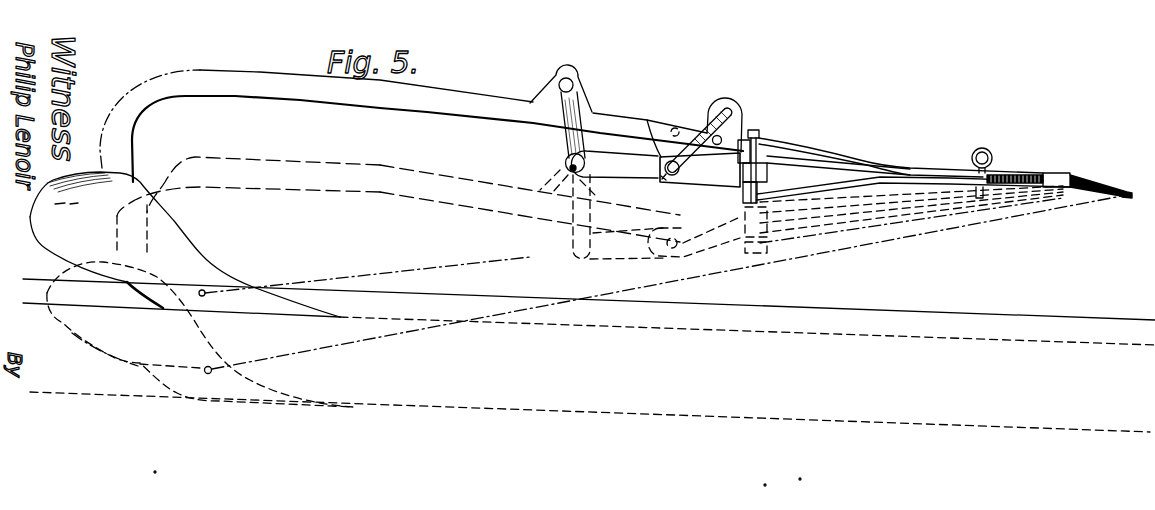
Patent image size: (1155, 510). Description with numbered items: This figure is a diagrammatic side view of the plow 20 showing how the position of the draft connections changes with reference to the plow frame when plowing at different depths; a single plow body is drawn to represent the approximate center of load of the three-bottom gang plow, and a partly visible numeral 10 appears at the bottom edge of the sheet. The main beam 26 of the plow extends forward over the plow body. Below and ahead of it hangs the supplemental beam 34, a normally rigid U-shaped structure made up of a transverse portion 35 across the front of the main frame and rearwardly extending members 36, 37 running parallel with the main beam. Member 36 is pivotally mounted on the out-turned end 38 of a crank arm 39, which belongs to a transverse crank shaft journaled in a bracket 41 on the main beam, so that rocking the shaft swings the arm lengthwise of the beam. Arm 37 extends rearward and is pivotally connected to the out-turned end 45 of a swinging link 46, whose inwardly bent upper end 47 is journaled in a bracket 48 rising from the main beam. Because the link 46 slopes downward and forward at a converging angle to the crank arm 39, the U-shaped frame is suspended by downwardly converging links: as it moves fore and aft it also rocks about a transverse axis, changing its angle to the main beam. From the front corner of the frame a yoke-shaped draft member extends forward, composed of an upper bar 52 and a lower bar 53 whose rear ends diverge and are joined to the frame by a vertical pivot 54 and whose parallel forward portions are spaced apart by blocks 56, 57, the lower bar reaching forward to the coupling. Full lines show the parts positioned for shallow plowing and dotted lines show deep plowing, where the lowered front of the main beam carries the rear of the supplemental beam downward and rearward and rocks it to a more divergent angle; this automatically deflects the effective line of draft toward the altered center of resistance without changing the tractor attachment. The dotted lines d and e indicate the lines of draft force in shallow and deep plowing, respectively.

The plow 10 is at (623, 504).
The plow 20 is at (403, 113).
The beam 26 is at (473, 118).
The supplemental beam 34 is at (867, 151).
The transverse portion 35 is at (760, 157).
The rearwardly extending member 36 is at (687, 178).
The rearwardly extending member 37 is at (618, 178).
The out-turned end 38 is at (660, 156).
The crank arm 39 is at (705, 126).
The bracket 41 is at (727, 108).
The out-turned end 45 is at (565, 167).
The swinging link 46 is at (565, 133).
The inwardly bent upper end 47 is at (555, 77).
The bracket 48 is at (578, 75).
The upper bar 52 is at (817, 150).
The lower bar 53 is at (855, 183).
The vertical pivot 54 is at (756, 137).
The block 56 is at (905, 168).
The block 57 is at (1073, 180).
The line of draft force d is at (426, 268).
The line of draft force e is at (407, 322).